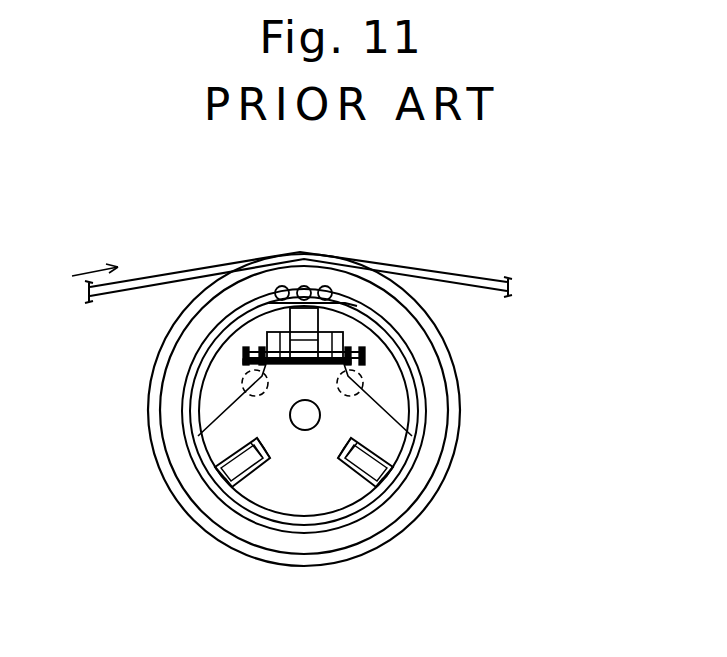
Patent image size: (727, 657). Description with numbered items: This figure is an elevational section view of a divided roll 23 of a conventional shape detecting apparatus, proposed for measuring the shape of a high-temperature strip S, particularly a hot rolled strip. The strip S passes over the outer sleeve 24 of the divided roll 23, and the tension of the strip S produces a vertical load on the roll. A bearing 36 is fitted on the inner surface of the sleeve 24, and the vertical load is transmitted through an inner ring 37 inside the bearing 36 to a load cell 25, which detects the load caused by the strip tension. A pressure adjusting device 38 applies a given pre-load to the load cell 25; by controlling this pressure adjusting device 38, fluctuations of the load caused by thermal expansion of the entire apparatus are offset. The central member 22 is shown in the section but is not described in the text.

The strip S is at (206, 263).
The shaft 22 is at (305, 422).
The divided roll 23 is at (492, 455).
The sleeve 24 is at (457, 403).
The load cell 25 is at (310, 327).
The bearing 36 is at (329, 286).
The inner ring 37 is at (199, 383).
The pressure adjusting device 38 is at (226, 486).